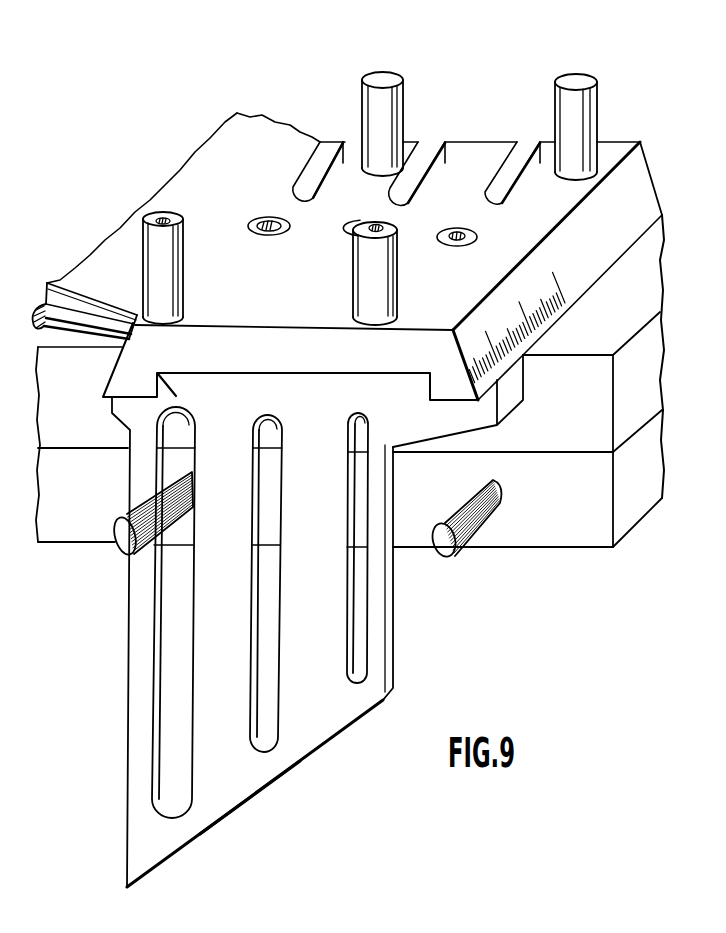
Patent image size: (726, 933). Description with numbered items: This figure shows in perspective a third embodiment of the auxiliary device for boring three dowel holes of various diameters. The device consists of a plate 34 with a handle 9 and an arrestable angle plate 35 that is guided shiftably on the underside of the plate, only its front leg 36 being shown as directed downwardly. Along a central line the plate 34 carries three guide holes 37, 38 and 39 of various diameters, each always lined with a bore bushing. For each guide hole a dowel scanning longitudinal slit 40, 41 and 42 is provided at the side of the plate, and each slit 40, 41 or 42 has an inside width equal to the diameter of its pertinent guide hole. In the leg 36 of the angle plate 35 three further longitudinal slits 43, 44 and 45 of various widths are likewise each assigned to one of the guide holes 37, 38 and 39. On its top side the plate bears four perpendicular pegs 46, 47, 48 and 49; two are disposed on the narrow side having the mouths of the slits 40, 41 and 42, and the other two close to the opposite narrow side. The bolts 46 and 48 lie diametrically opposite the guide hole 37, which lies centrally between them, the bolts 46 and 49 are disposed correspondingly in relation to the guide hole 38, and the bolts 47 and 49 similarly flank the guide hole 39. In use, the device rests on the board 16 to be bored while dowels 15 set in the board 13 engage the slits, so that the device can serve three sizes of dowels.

The handle 9 is at (69, 297).
The board 13 is at (570, 530).
The dowels 15 is at (470, 538).
The board 16 is at (594, 394).
The plate 34 is at (232, 250).
The angle plate 35 is at (271, 790).
The front leg 36 is at (140, 687).
The guide hole 37 is at (263, 221).
The guide hole 38 is at (348, 236).
The guide hole 39 is at (477, 236).
The longitudinal slit 40 is at (342, 140).
The longitudinal slit 41 is at (440, 163).
The longitudinal slit 42 is at (538, 162).
The longitudinal slit 43 is at (170, 607).
The longitudinal slit 44 is at (267, 712).
The longitudinal slit 45 is at (358, 607).
The perpendicular peg 46 is at (403, 96).
The perpendicular peg 47 is at (581, 123).
The perpendicular peg 48 is at (153, 258).
The perpendicular peg 49 is at (390, 276).